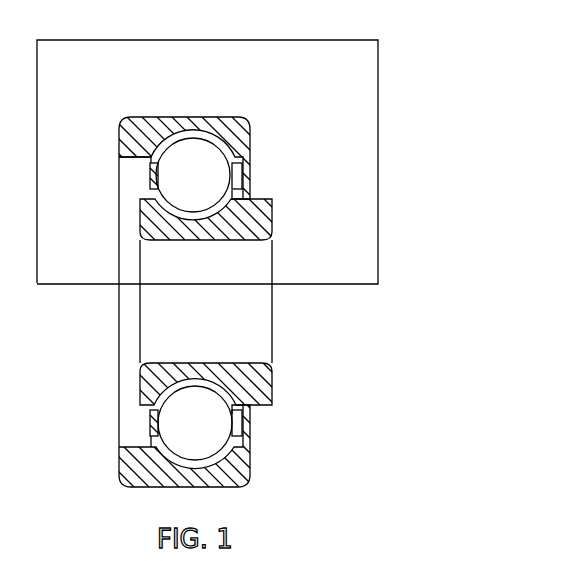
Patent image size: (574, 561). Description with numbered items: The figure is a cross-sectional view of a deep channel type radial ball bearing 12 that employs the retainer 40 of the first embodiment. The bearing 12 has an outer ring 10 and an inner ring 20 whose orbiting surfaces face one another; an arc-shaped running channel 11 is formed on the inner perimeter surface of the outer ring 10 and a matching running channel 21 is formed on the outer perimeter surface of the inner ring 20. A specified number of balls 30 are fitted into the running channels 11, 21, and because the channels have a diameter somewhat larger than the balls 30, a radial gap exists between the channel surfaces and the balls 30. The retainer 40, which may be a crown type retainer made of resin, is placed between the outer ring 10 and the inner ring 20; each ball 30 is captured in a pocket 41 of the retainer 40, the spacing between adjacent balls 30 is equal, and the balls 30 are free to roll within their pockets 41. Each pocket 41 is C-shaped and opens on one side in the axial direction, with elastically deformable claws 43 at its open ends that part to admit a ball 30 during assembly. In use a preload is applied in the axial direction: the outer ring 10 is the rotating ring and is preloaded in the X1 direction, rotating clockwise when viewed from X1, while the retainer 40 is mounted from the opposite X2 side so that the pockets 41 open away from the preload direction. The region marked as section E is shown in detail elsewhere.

The outer ring 10 is at (250, 144).
The running channel 11 is at (156, 157).
The radial ball bearing 12 is at (250, 110).
The inner ring 20 is at (140, 380).
The running channel 21 is at (252, 410).
The ball 30 is at (253, 193).
The retainer 40 is at (150, 180).
The pocket 41 is at (165, 181).
The claw 43 is at (250, 180).
The section E is at (379, 127).
The X1 direction X1 is at (287, 302).
The X2 direction X2 is at (106, 302).